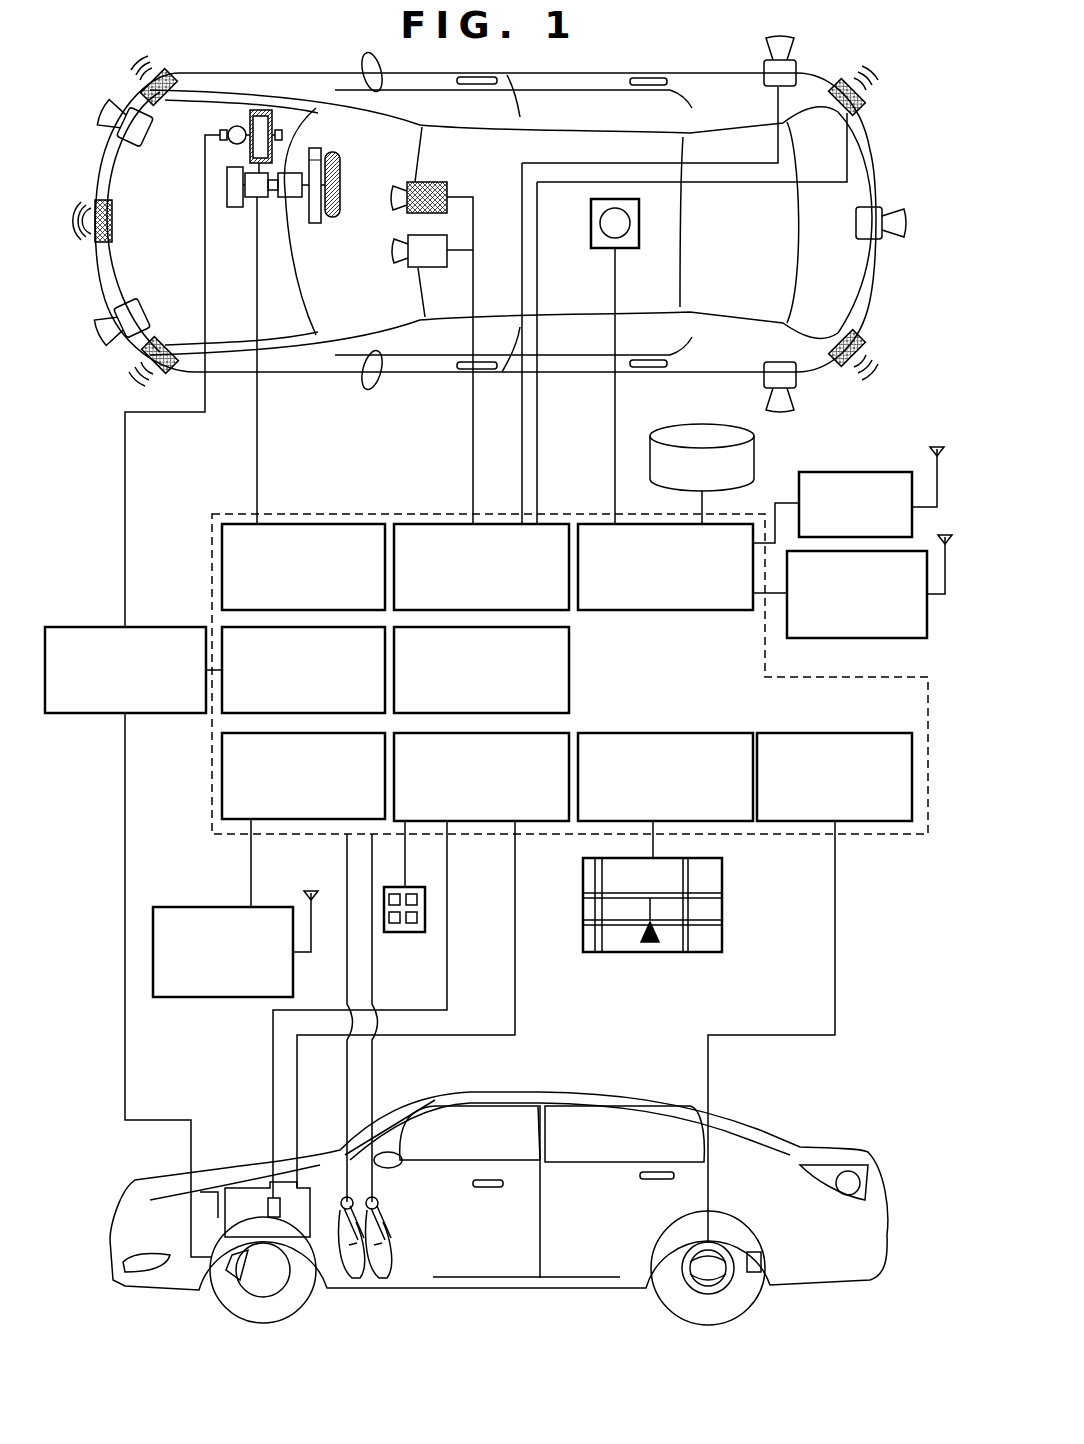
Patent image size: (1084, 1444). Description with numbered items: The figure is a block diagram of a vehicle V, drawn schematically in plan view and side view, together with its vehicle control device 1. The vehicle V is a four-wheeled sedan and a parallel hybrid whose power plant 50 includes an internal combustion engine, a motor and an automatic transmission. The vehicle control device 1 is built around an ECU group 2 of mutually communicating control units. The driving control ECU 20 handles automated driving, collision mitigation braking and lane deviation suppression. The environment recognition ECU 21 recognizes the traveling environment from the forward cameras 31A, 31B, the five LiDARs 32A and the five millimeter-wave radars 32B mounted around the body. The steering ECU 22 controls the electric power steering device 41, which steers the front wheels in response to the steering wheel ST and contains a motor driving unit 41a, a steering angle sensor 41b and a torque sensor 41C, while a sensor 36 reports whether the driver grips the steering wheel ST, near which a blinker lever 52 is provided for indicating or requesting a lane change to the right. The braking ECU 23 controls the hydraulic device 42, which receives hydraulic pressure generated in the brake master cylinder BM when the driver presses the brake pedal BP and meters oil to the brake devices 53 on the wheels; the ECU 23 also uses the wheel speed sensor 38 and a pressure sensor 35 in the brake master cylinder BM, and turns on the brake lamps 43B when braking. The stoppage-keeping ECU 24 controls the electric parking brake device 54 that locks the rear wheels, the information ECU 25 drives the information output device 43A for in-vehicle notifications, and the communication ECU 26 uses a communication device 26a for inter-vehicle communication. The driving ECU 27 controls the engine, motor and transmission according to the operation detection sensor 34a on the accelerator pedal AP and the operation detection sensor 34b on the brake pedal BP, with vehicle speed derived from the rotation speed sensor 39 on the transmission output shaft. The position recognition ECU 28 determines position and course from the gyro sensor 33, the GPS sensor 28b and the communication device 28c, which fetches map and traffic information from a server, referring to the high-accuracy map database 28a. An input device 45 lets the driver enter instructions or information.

The vehicle control device 1 is at (886, 373).
The ECU group 2 is at (345, 513).
The driving control ECU 20 is at (569, 662).
The environment recognition ECU 21 is at (553, 523).
The steering ECU 22 is at (296, 523).
The braking ECU 23 is at (224, 716).
The stoppage-keeping ECU 24 is at (860, 733).
The information ECU 25 is at (587, 834).
The communication ECU 26 is at (222, 779).
The communication device 26a is at (175, 907).
The driving ECU 27 is at (487, 822).
The position recognition ECU 28 is at (745, 523).
The database 28a is at (690, 424).
The GPS sensor 28b is at (853, 472).
The communication device 28c is at (870, 638).
The camera 31A is at (408, 267).
The camera 31B is at (447, 193).
The LiDAR 32A is at (145, 147).
The millimeter-wave radar 32B is at (177, 72).
The gyro sensor 33 is at (597, 248).
The operation detection sensor 34a is at (352, 1276).
The operation detection sensor 34b is at (380, 1205).
The pressure sensor 35 is at (260, 110).
The sensor 36 is at (340, 163).
The wheel speed sensor 38 is at (754, 1278).
The rotation speed sensor 39 is at (270, 1198).
The electric power steering device 41 is at (280, 282).
The driving unit 41a is at (270, 215).
The steering angle sensor 41b is at (235, 207).
The torque sensor 41C is at (292, 173).
The hydraulic device 42 is at (68, 627).
The information output device 43A is at (683, 953).
The brake lamps 43B is at (848, 1170).
The input device 45 is at (409, 932).
The power plant 50 is at (306, 1292).
The blinker lever 52 is at (316, 148).
The brake device 53 is at (234, 1283).
The electric parking brake device 54 is at (698, 1293).
The accelerator pedal AP is at (405, 1280).
The brake pedal BP is at (388, 1265).
The brake master cylinder BM is at (232, 127).
The steering wheel ST is at (340, 152).
The vehicle V is at (889, 124).